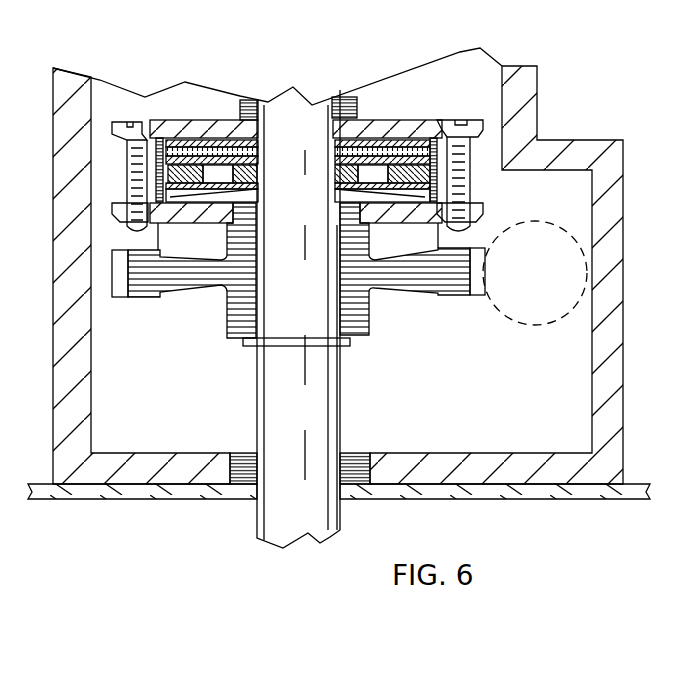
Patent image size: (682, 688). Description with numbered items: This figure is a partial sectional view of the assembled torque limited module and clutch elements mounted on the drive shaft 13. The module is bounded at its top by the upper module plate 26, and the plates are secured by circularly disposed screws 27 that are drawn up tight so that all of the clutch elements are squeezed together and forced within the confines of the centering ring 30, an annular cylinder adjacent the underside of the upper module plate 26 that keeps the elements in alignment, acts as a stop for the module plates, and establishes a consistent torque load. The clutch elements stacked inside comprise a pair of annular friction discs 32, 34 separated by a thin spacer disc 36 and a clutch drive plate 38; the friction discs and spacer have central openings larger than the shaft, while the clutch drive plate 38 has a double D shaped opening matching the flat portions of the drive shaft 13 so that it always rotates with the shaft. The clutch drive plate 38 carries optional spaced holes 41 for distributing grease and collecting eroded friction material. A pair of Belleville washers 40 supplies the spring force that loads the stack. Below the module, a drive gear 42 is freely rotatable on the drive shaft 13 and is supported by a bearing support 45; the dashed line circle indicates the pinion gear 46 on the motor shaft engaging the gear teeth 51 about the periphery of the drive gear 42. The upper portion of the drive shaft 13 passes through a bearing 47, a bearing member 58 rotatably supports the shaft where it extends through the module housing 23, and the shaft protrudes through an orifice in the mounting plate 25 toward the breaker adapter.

The drive shaft 13 is at (348, 392).
The module housing 23 is at (625, 450).
The mounting plate 25 is at (603, 500).
The upper module plate 26 is at (377, 127).
The screws 27 is at (122, 173).
The centering ring 30 is at (152, 142).
The friction disc 32 is at (405, 136).
The friction disc 34 is at (427, 140).
The spacer disc 36 is at (203, 147).
The clutch drive plate 38 is at (472, 168).
The Belleville washers 40 is at (383, 193).
The spaced holes 41 is at (218, 177).
The drive gear 42 is at (390, 290).
The bearing support 45 is at (248, 350).
The pinion gear 46 is at (508, 325).
The bearing 47 is at (347, 98).
The gear teeth 51 is at (120, 298).
The bearing member 58 is at (240, 455).